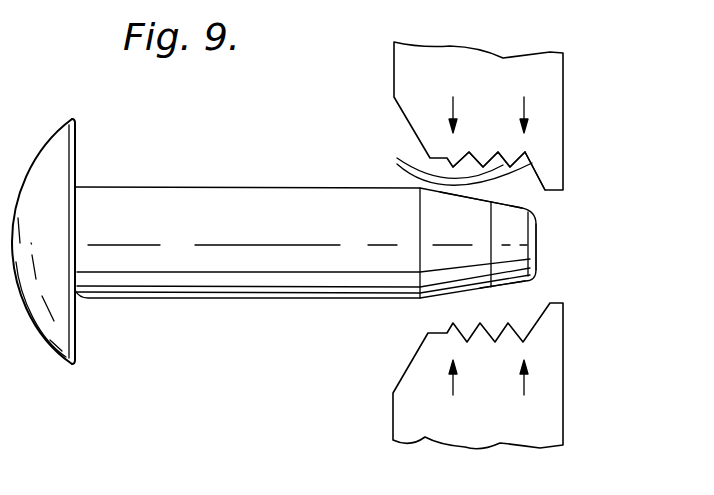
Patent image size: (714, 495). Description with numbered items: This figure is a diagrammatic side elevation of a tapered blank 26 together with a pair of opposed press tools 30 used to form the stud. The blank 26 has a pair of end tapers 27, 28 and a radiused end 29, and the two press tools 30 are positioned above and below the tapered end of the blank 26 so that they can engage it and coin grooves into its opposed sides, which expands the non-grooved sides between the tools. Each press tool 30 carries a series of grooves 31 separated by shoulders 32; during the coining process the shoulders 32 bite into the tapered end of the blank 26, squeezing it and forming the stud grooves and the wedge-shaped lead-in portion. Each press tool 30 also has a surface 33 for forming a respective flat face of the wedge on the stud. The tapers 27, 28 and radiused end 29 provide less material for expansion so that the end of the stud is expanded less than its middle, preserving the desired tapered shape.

The tapered blank 26 is at (338, 238).
The end taper 27 is at (463, 209).
The end taper 28 is at (503, 224).
The radiused end 29 is at (535, 280).
The press tool 30 is at (548, 103).
The groove 31 is at (452, 159).
The shoulder 32 is at (520, 161).
The surface 33 is at (540, 176).